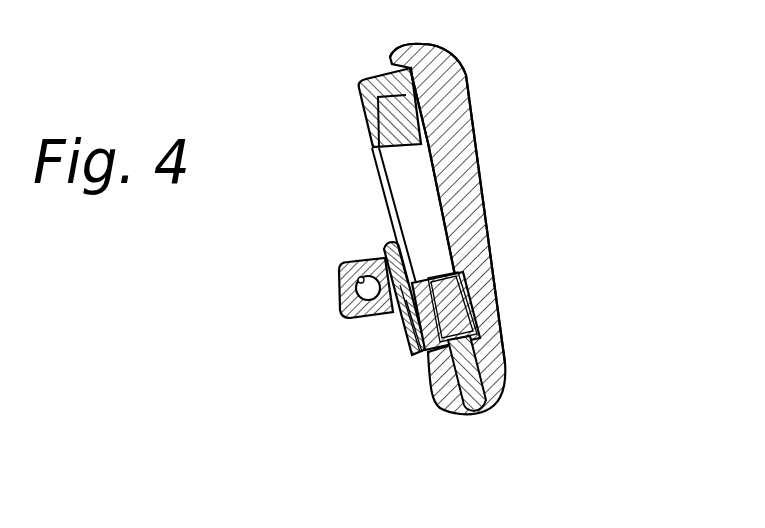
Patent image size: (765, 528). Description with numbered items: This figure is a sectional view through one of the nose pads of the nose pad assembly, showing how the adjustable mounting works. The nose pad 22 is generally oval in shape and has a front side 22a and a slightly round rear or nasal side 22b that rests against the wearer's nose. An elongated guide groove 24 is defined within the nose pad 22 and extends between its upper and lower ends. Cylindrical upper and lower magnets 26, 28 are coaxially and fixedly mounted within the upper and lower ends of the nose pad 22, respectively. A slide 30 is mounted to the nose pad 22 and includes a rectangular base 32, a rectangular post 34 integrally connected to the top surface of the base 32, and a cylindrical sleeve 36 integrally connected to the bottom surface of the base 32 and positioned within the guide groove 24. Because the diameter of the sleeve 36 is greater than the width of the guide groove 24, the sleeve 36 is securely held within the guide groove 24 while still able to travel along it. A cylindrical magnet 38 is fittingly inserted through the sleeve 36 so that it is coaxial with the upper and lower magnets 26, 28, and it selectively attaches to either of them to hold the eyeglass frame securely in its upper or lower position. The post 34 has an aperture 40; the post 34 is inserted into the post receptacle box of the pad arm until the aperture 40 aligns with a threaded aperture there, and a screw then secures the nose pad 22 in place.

The nose pad 22 is at (458, 91).
The front side 22a is at (388, 60).
The rear or nasal side 22b is at (498, 205).
The guide groove 24 is at (452, 243).
The upper magnet 26 is at (372, 120).
The lower magnet 28 is at (478, 375).
The slide 30 is at (340, 299).
The base 32 is at (412, 357).
The post 34 is at (384, 319).
The sleeve 36 is at (470, 293).
The magnet 38 is at (470, 326).
The aperture 40 is at (354, 263).